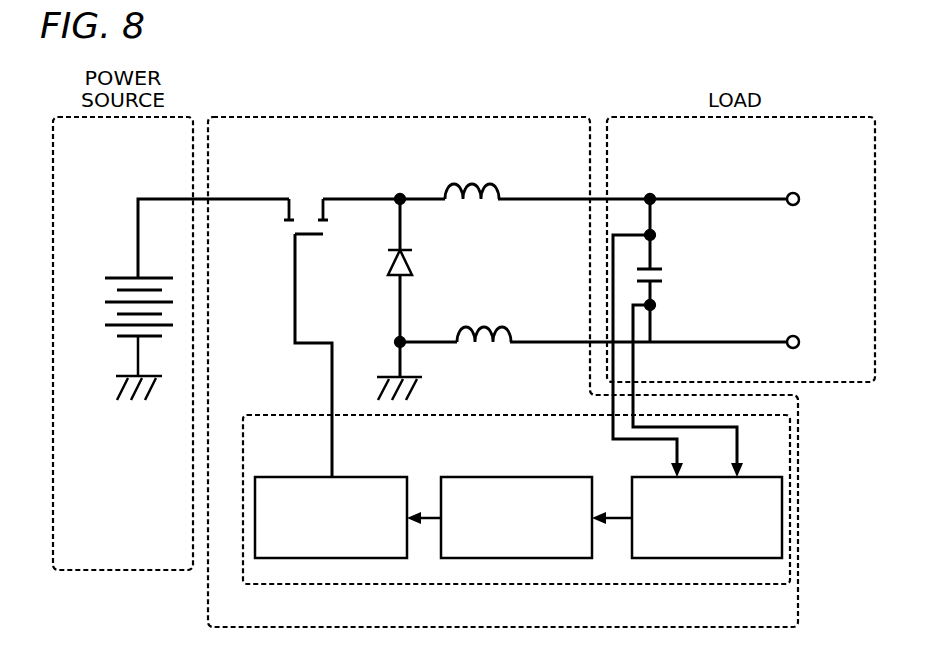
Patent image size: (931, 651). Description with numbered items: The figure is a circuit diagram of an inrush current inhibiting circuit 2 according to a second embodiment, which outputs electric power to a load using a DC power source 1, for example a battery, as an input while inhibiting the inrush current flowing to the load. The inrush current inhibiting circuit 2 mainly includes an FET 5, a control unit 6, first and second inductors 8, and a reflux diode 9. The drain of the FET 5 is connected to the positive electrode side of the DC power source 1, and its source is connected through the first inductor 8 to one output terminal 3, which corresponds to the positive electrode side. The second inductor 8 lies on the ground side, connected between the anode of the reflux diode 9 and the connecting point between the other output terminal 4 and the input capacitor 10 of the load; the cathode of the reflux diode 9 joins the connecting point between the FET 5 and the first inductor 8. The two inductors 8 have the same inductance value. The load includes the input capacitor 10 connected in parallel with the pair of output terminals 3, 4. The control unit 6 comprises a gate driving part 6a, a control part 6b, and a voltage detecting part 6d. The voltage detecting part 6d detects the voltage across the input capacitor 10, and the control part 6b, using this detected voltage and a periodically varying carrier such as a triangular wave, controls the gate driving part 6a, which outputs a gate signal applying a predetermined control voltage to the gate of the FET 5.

The DC power source 1 is at (123, 277).
The inrush current inhibiting circuit 2 is at (540, 117).
The output terminal 3 is at (798, 193).
The output terminal 4 is at (798, 336).
The FET 5 is at (308, 216).
The control unit 6 is at (297, 415).
The gate driving part 6a is at (400, 477).
The control part 6b is at (527, 477).
The voltage detecting part 6d is at (773, 474).
The first and second inductors 8 is at (498, 183).
The reflux diode 9 is at (412, 265).
The input capacitor 10 is at (652, 265).